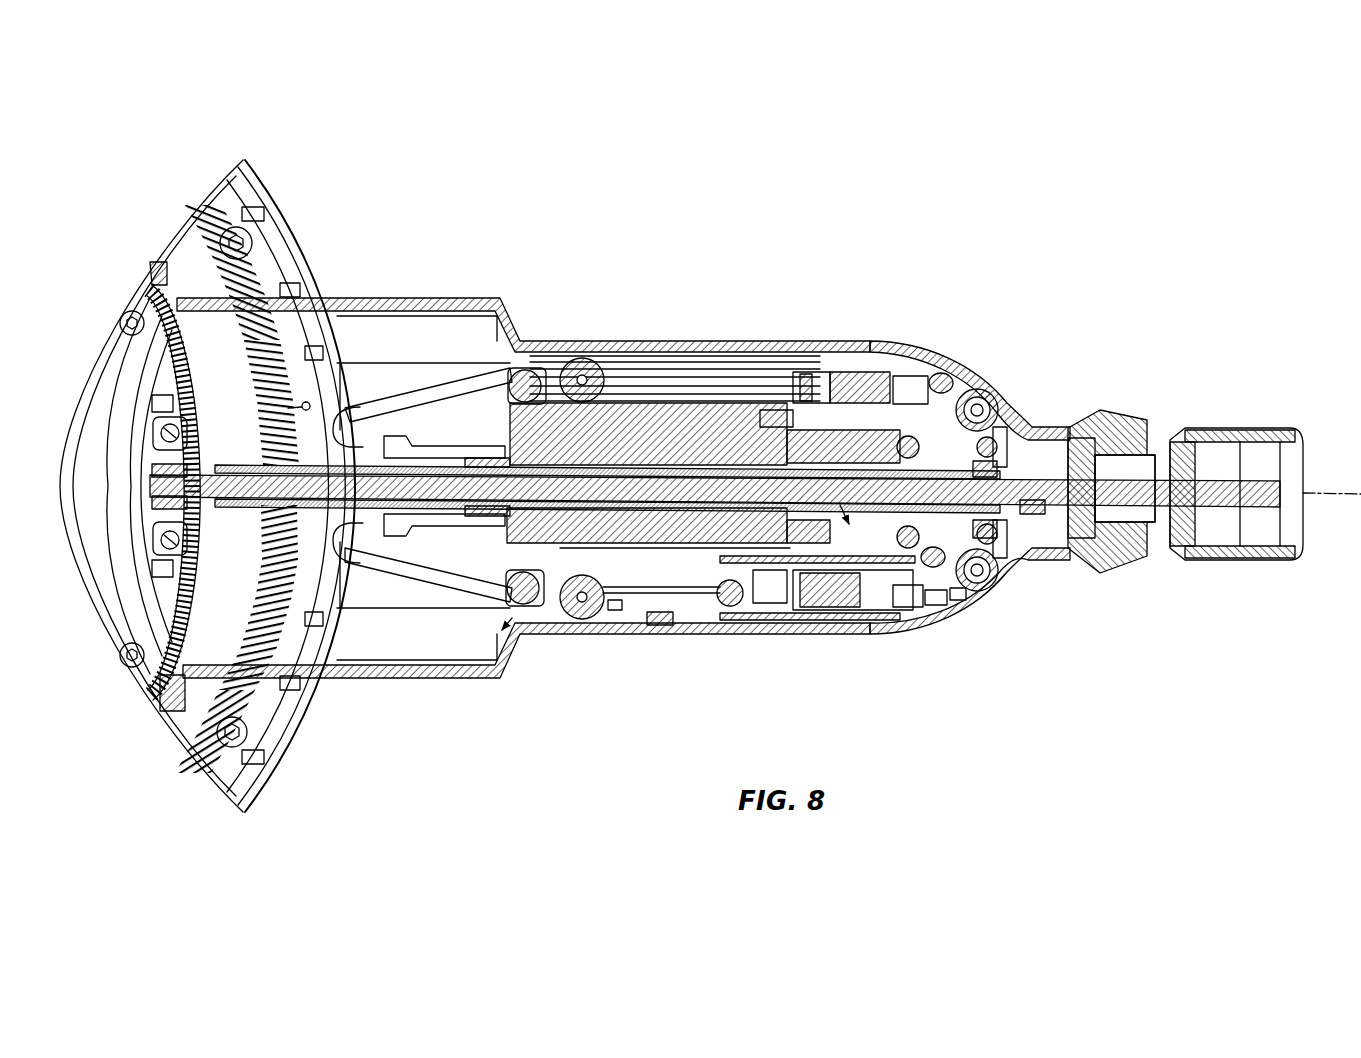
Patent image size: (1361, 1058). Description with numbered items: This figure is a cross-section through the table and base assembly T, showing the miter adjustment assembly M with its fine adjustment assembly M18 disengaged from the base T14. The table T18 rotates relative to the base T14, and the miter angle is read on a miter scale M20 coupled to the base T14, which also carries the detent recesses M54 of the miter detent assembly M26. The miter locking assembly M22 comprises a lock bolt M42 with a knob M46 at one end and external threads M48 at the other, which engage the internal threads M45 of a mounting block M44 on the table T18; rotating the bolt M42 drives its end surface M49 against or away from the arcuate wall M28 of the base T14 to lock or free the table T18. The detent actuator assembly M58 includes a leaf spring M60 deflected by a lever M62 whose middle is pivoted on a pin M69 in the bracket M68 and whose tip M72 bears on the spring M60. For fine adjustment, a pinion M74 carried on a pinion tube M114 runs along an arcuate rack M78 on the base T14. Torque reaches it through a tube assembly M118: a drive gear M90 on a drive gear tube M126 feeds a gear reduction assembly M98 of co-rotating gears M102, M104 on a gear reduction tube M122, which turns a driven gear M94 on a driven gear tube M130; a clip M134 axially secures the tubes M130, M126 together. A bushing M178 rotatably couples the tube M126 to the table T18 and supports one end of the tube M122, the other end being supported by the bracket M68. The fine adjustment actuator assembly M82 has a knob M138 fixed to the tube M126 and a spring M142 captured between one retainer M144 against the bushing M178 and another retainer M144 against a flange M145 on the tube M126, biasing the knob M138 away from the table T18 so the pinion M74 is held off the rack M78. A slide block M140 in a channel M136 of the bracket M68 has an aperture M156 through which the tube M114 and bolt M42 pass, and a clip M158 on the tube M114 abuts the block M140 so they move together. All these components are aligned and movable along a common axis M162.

The table and base assembly T is at (984, 181).
The base T14 is at (262, 798).
The table T18 is at (470, 300).
The miter adjustment assembly M is at (1185, 288).
The fine adjustment assembly M18 is at (252, 445).
The miter scale M20 is at (221, 777).
The miter locking assembly M22 is at (1229, 376).
The miter detent assembly M26 is at (375, 750).
The arcuate wall M28 is at (182, 540).
The lock bolt M42 is at (650, 403).
The mounting block M44 is at (257, 310).
The internal threads M45 is at (122, 470).
The knob M46 is at (1219, 427).
The external threads M48 is at (183, 617).
The end surface M49 is at (140, 493).
The detent recesses M54 is at (248, 760).
The detent actuator assembly M58 is at (503, 655).
The leaf spring M60 is at (480, 640).
The lever M62 is at (458, 518).
The bracket M68 is at (688, 575).
The pin M69 is at (616, 612).
The tip M72 is at (388, 545).
The pinion M74 is at (275, 650).
The rack M78 is at (248, 660).
The fine adjustment actuator assembly M82 is at (1142, 386).
The drive gear M90 is at (902, 620).
The driven gear M94 is at (808, 610).
The gear reduction assembly M98 is at (905, 395).
The co-rotating gear M102 is at (860, 372).
The co-rotating gear M104 is at (810, 405).
The pinion tube M114 is at (428, 440).
The tube assembly M118 is at (392, 450).
The gear reduction tube M122 is at (897, 365).
The drive gear tube M126 is at (1075, 418).
The driven gear tube M130 is at (930, 603).
The clip M134 is at (960, 598).
The channel M136 is at (621, 403).
The knob M138 is at (1141, 557).
The slide block M140 is at (692, 403).
The spring M142 is at (948, 392).
The retainer M144 is at (960, 395).
The flange M145 is at (1035, 450).
The aperture M156 is at (596, 548).
The clip M158 is at (785, 565).
The common axis M162 is at (1300, 528).
The bushing M178 is at (1050, 524).